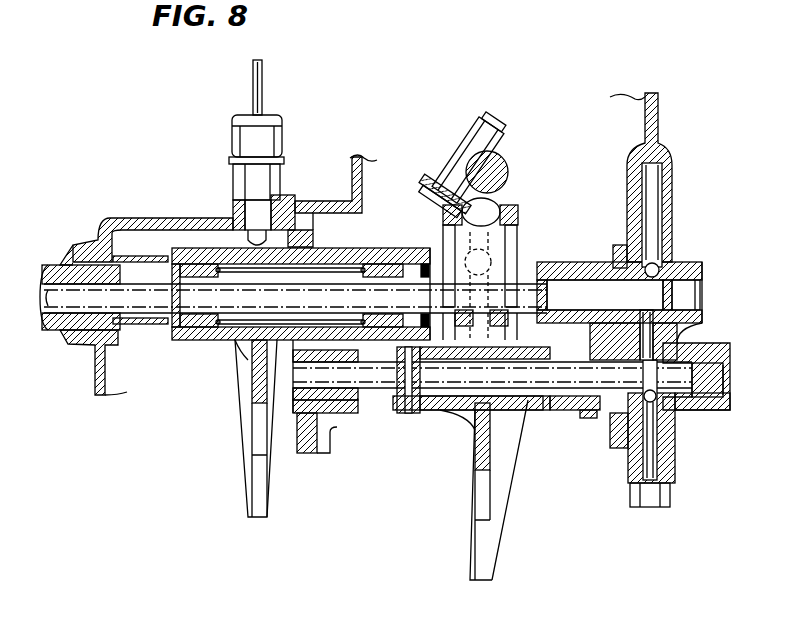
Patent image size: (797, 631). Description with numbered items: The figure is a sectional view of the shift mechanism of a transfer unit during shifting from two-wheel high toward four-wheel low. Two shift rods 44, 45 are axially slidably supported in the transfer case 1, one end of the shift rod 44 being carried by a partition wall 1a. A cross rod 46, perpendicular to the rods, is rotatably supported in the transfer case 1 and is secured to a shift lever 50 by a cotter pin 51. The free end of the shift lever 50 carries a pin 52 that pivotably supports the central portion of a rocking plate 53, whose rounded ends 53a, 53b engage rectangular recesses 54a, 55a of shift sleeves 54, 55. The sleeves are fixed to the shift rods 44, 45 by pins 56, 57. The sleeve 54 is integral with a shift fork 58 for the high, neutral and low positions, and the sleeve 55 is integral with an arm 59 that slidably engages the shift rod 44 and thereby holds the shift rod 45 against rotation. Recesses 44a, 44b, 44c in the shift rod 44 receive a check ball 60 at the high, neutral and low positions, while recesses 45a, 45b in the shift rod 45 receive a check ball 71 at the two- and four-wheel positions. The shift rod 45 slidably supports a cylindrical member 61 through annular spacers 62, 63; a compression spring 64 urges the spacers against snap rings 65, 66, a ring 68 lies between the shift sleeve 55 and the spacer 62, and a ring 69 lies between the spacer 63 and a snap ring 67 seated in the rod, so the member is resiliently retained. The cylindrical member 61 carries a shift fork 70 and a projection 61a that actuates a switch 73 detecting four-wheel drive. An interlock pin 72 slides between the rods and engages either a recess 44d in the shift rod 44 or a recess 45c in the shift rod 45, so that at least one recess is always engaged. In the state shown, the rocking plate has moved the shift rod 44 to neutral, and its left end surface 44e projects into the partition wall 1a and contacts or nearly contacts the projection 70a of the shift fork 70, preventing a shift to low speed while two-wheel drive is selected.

The transfer case 1 is at (352, 165).
The partition wall 1a is at (314, 430).
The shift rod 44 is at (360, 400).
The recess 44a is at (626, 430).
The recess 44b is at (672, 390).
The recess 44c is at (696, 411).
The recess 44d is at (617, 368).
The left end surface 44e is at (290, 396).
The shift rod 45 is at (130, 316).
The recess 45a is at (605, 296).
The recess 45b is at (642, 296).
The recess 45c is at (662, 301).
The cross rod 46 is at (506, 165).
The shift lever 50 is at (498, 204).
The cotter pin 51 is at (470, 150).
The pin 52 is at (447, 217).
The rocking plate 53 is at (500, 242).
The end of rocking plate 53a is at (512, 332).
The end of rocking plate 53b is at (507, 212).
The shift sleeve 54 is at (536, 411).
The rectangular recess 54a is at (512, 347).
The shift sleeve 55 is at (598, 269).
The rectangular recess 55a is at (518, 215).
The pin 56 is at (410, 414).
The pin 57 is at (540, 268).
The shift fork 58 is at (490, 541).
The arm 59 is at (590, 413).
The check ball 60 is at (675, 440).
The cylindrical member 61 is at (177, 341).
The projection 61a is at (284, 226).
The annular spacer 62 is at (371, 266).
The annular spacer 63 is at (205, 341).
The compression spring 64 is at (236, 249).
The snap ring 65 is at (396, 264).
The snap ring 66 is at (178, 251).
The snap ring 67 is at (120, 232).
The ring 68 is at (425, 264).
The ring 69 is at (145, 325).
The shift fork 70 is at (262, 483).
The projection 70a is at (262, 372).
The check ball 71 is at (660, 270).
The interlock pin 72 is at (700, 352).
The switch 73 is at (234, 143).